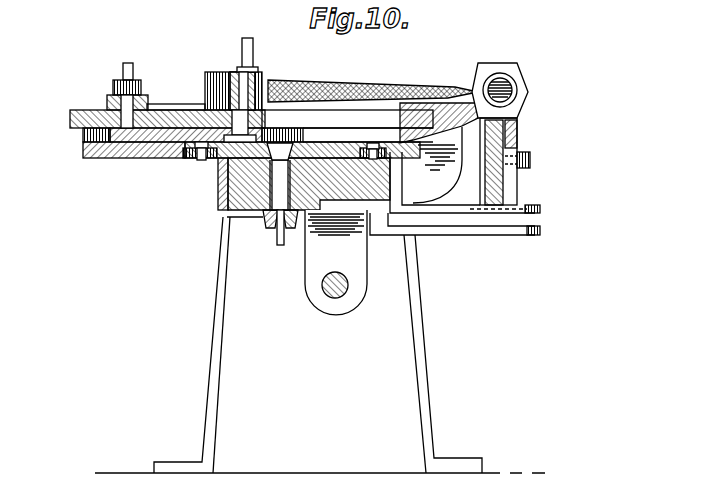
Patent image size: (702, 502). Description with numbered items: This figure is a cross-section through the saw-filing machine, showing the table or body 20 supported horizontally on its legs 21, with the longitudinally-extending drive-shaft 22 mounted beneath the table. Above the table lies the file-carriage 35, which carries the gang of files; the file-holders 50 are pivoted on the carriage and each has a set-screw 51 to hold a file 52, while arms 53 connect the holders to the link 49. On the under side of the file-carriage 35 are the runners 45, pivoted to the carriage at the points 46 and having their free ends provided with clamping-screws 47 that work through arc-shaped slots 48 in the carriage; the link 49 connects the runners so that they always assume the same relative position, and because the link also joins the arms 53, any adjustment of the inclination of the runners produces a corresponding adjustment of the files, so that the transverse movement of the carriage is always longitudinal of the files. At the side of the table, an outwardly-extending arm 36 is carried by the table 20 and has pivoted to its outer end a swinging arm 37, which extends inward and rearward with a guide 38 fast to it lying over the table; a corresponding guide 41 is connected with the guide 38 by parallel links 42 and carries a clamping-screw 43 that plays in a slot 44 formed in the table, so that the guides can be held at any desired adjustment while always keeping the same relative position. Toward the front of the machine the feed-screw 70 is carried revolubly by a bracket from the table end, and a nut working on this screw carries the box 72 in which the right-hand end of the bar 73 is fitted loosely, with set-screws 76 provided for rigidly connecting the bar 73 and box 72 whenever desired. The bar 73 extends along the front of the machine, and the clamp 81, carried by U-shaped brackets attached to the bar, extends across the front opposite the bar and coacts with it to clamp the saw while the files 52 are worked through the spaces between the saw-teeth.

The table 20 is at (226, 188).
The legs 21 is at (421, 410).
The drive-shaft 22 is at (325, 290).
The file-carriage 35 is at (70, 119).
The outwardly-extending arm 36 is at (442, 236).
The swinging arm 37 is at (540, 216).
The guide 38 is at (375, 140).
The guide 41 is at (317, 140).
The parallel links 42 is at (382, 147).
The clamping-screw 43 is at (265, 214).
The slot 44 is at (217, 202).
The runners 45 is at (143, 142).
The pivot points 46 is at (235, 118).
The clamping-screws 47 is at (133, 93).
The arc-shaped slots 48 is at (85, 135).
The link 49 is at (115, 95).
The file-holders 50 is at (216, 70).
The set-screws 51 is at (254, 58).
The files 52 is at (395, 82).
The arms 53 is at (170, 108).
The feed-screw 70 is at (518, 85).
The box 72 is at (507, 176).
The bar 73 is at (504, 190).
The set-screws 76 is at (530, 159).
The clamp 81 is at (516, 140).